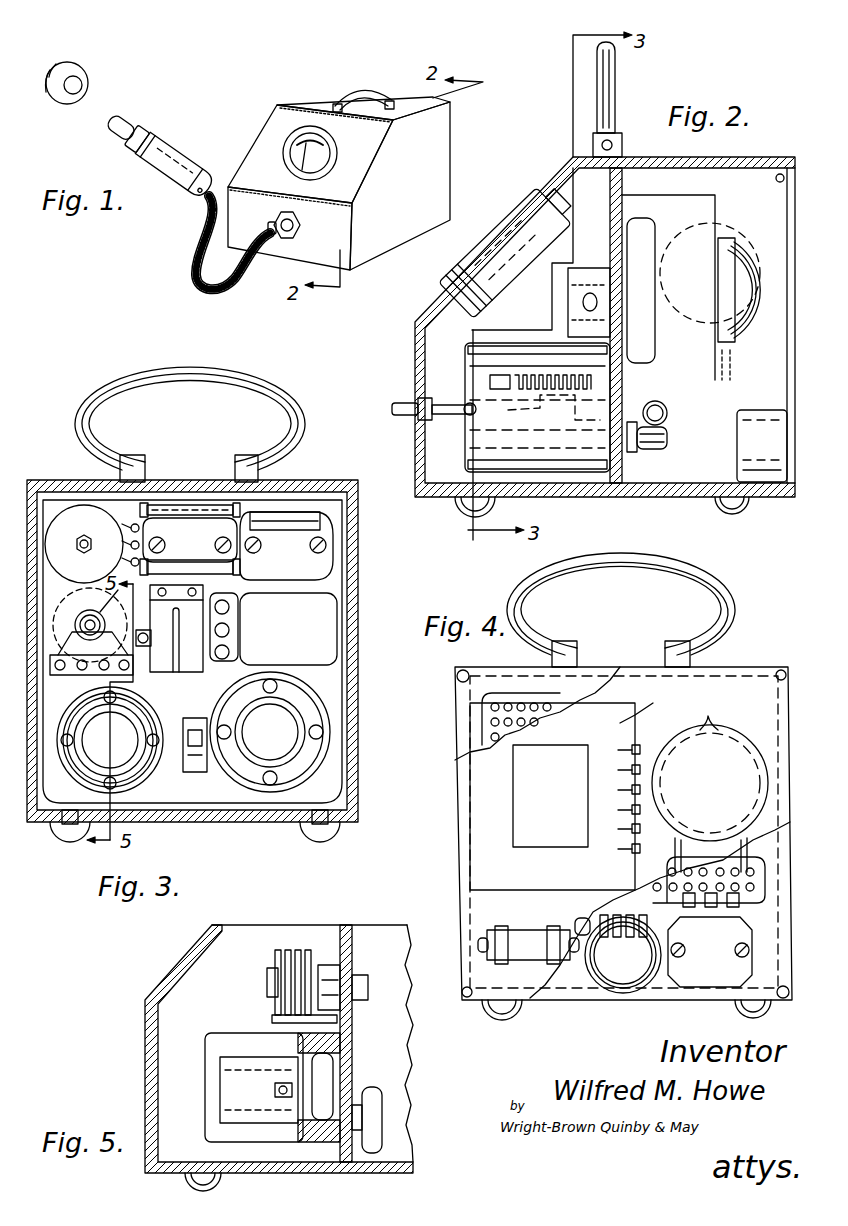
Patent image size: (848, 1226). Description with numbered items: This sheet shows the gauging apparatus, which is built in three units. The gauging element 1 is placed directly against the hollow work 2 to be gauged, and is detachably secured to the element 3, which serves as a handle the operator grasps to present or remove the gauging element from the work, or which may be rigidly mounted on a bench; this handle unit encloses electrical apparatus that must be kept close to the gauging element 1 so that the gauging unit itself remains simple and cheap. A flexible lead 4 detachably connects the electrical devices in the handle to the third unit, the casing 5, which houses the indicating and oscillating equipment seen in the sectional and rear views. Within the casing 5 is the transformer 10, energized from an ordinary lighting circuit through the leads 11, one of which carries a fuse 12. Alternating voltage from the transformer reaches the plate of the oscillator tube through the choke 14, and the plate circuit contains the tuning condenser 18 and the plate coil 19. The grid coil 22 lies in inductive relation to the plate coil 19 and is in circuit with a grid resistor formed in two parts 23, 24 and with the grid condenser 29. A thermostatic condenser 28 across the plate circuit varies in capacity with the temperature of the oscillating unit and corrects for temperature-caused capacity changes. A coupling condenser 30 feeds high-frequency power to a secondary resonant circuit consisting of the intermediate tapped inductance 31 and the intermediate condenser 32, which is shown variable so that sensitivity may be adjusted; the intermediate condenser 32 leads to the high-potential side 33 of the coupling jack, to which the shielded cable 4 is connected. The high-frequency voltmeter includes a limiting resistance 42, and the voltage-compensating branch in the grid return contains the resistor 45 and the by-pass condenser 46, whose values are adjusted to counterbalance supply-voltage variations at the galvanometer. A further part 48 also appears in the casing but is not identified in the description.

In FIG. 1, the gauging element 1 is at (134, 129).
In FIG. 1, the work 2 is at (79, 84).
In FIG. 1, the handle element 3 is at (184, 160).
In FIG. 1, the flexible lead 4 is at (186, 247).
In FIG. 1, the unit casing 5 is at (433, 173).
In FIG. 2, the unit casing 5 is at (414, 334).
In FIG. 3, the unit casing 5 is at (358, 720).
In FIG. 4, the unit casing 5 is at (455, 845).
In FIG. 5, the unit casing 5 is at (150, 992).
In FIG. 2, the transformer 10 is at (716, 197).
In FIG. 4, the transformer 10 is at (623, 726).
In FIG. 2, the leads 11 is at (760, 498).
In FIG. 4, the leads 11 is at (600, 990).
In FIG. 2, the fuse 12 is at (650, 452).
In FIG. 4, the fuse 12 is at (523, 944).
In FIG. 2, the choke 14 is at (667, 418).
In FIG. 4, the choke 14 is at (583, 918).
In FIG. 2, the tuning condenser 18 is at (565, 300).
In FIG. 3, the tuning condenser 18 is at (340, 630).
In FIG. 2, the plate coil 19 is at (560, 372).
In FIG. 3, the plate coil 19 is at (330, 712).
In FIG. 2, the grid coil 22 is at (466, 344).
In FIG. 3, the grid coil 22 is at (317, 690).
In FIG. 3, the grid resistor part 23 is at (293, 528).
In FIG. 3, the grid resistor part 24 is at (68, 520).
In FIG. 3, the thermostatic condenser 28 is at (192, 672).
In FIG. 3, the grid condenser 29 is at (163, 527).
In FIG. 3, the coupling condenser 30 is at (78, 606).
In FIG. 5, the coupling condenser 30 is at (273, 961).
In FIG. 3, the intermediate tapped inductance 31 is at (136, 772).
In FIG. 5, the intermediate tapped inductance 31 is at (228, 1094).
In FIG. 3, the intermediate condenser 32 is at (207, 762).
In FIG. 5, the intermediate condenser 32 is at (330, 1073).
In FIG. 2, the high potential side of coupling jack 33 is at (456, 398).
In FIG. 3, the limiting resistance 42 is at (186, 507).
In FIG. 3, the resistor 45 is at (188, 567).
In FIG. 3, the by-pass condenser 46 is at (317, 565).
In FIG. 2, the cylinder 48 is at (524, 188).